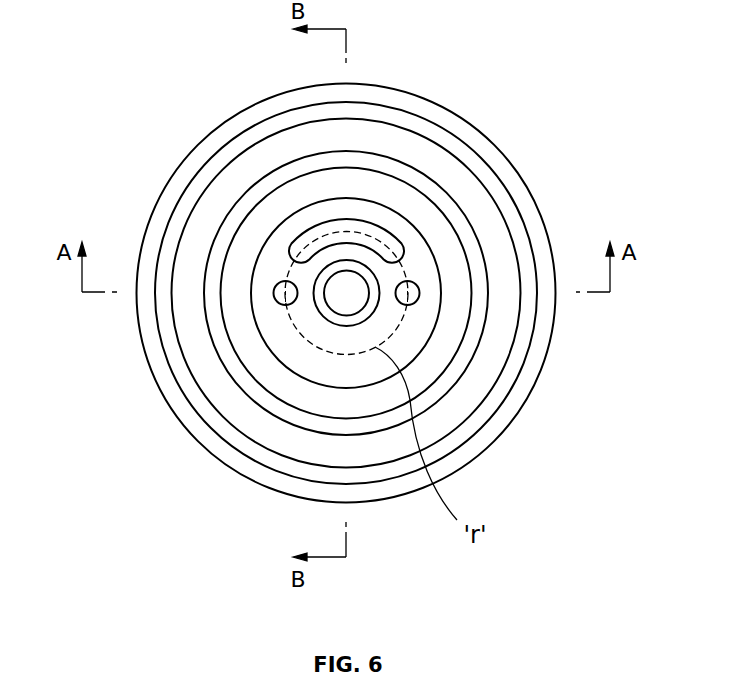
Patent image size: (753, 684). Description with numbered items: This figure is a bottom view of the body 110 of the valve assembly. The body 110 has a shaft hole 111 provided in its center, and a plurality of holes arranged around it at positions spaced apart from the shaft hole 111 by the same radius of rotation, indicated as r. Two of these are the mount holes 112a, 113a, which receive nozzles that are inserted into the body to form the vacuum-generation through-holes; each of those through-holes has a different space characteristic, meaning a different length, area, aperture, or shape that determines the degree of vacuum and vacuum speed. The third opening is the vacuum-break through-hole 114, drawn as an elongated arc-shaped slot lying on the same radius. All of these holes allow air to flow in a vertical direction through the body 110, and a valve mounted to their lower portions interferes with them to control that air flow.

The body 110 is at (436, 93).
The shaft hole 111 is at (334, 305).
The mount hole 112a is at (274, 300).
The mount hole 113a is at (418, 302).
The vacuum-break through-hole 114 is at (388, 236).